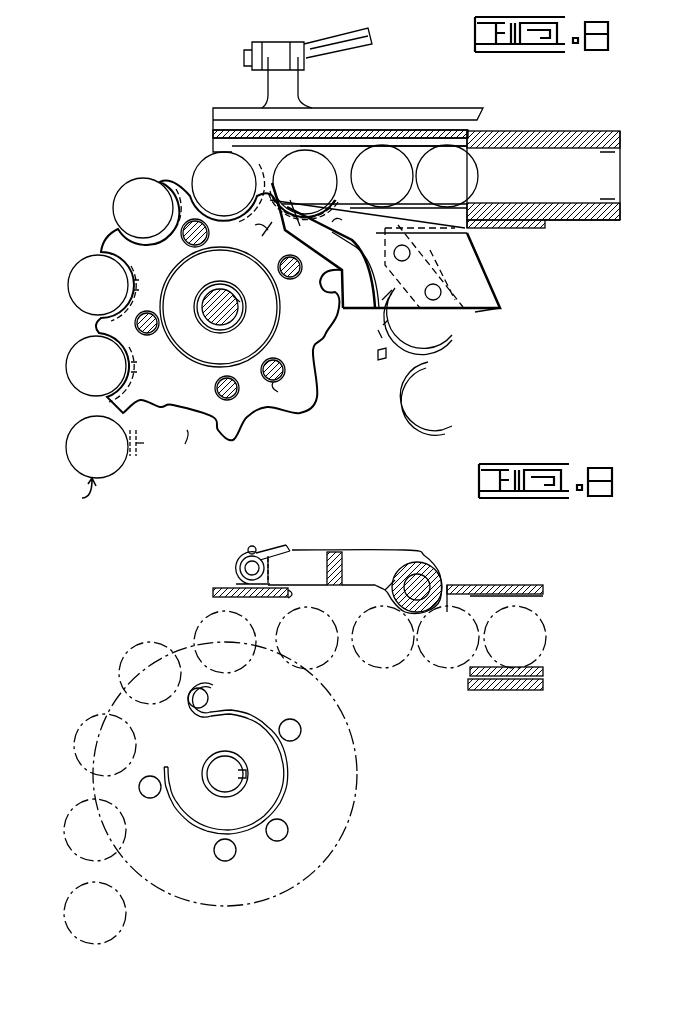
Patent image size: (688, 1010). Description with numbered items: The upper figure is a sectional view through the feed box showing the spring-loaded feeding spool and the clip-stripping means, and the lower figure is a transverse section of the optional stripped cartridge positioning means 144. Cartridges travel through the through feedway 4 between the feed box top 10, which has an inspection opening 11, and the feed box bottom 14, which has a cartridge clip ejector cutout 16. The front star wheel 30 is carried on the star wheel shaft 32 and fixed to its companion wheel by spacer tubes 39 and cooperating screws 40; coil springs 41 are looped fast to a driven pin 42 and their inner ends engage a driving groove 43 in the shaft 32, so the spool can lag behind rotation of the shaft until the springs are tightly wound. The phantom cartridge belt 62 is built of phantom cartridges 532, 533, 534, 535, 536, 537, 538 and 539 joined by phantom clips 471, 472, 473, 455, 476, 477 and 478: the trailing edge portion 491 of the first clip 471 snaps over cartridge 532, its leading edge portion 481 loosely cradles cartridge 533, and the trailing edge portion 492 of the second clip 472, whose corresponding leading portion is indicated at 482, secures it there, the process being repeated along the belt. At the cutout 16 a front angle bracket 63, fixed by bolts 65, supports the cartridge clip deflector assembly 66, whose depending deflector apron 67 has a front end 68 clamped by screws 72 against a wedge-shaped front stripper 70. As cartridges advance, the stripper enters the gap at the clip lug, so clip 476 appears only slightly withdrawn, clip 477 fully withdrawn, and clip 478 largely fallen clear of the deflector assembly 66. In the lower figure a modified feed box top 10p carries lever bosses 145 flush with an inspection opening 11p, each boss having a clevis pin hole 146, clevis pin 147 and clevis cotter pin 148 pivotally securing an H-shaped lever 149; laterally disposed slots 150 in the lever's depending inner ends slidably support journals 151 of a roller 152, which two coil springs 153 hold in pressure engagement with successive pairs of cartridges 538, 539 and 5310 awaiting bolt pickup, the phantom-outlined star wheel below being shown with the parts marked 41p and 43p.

In FIG. 6, the through feedway 4 is at (582, 146).
In FIG. 6, the feed box top 10 is at (525, 134).
In FIG. 6, the inspection opening 11 is at (424, 122).
In FIG. 6, the feed box bottom 14 is at (545, 226).
In FIG. 6, the cartridge clip ejector cutout 16 is at (472, 230).
In FIG. 6, the bolts 65 is at (470, 206).
In FIG. 6, the front star wheel 30 is at (248, 412).
In FIG. 6, the star wheel shaft 32 is at (214, 324).
In FIG. 6, the spacer tubes 39 is at (280, 386).
In FIG. 6, the screws 40 is at (278, 362).
In FIG. 6, the coil springs 41 is at (238, 290).
In FIG. 6, the driven pin 42 is at (200, 236).
In FIG. 6, the driving groove 43 is at (246, 308).
In FIG. 6, the phantom cartridge belt 62 is at (74, 495).
In FIG. 6, the front angle bracket 63 is at (452, 278).
In FIG. 6, the cartridge clip deflector assembly 66 is at (324, 302).
In FIG. 6, the deflector apron 67 is at (326, 260).
In FIG. 6, the front end 68 is at (424, 248).
In FIG. 6, the front stripper 70 is at (483, 310).
In FIG. 6, the screws 72 is at (432, 302).
In FIG. 6, the latch 455 is at (255, 230).
In FIG. 6, the phantom clip 471 is at (203, 445).
In FIG. 6, the second phantom clip 472 is at (218, 380).
In FIG. 6, the phantom clip 473 is at (142, 278).
In FIG. 6, the phantom clip 476 is at (330, 220).
In FIG. 6, the phantom clip 477 is at (413, 312).
In FIG. 6, the phantom clip 478 is at (410, 374).
In FIG. 6, the leading edge portion 481 is at (178, 444).
In FIG. 6, the pin 482 is at (148, 328).
In FIG. 6, the trailing edge portion 491 is at (140, 456).
In FIG. 6, the trailing edge portion 492 is at (140, 370).
In FIG. 6, the phantom cartridge 532 is at (68, 462).
In FIG. 6, the second phantom cartridge 533 is at (68, 368).
In FIG. 6, the phantom cartridge 534 is at (72, 290).
In FIG. 6, the phantom cartridge 535 is at (114, 209).
In FIG. 6, the phantom cartridge 536 is at (248, 158).
In FIG. 6, the sixth phantom cartridge 537 is at (276, 182).
In FIG. 6, the seventh phantom cartridge 538 is at (352, 176).
In FIG. 9, the seventh phantom cartridge 538 is at (354, 628).
In FIG. 6, the eighth phantom cartridge 539 is at (414, 176).
In FIG. 9, the eighth phantom cartridge 539 is at (418, 628).
In FIG. 9, the ball 5310 is at (490, 618).
In FIG. 9, the modified feed box top 10p is at (526, 584).
In FIG. 9, the inspection opening 11p is at (272, 600).
In FIG. 9, the spiral spring 41p is at (272, 718).
In FIG. 9, the disc 43p is at (210, 775).
In FIG. 9, the stripped cartridge positioning means 144 is at (344, 540).
In FIG. 9, the lever bosses 145 is at (272, 572).
In FIG. 9, the clevis pin hole 146 is at (248, 575).
In FIG. 9, the clevis pin 147 is at (240, 562).
In FIG. 9, the clevis cotter pin 148 is at (248, 548).
In FIG. 9, the H-shaped lever 149 is at (384, 550).
In FIG. 9, the laterally disposed slots 150 is at (392, 575).
In FIG. 9, the journals 151 is at (438, 560).
In FIG. 9, the roller 152 is at (448, 586).
In FIG. 9, the coil springs 153 is at (285, 545).